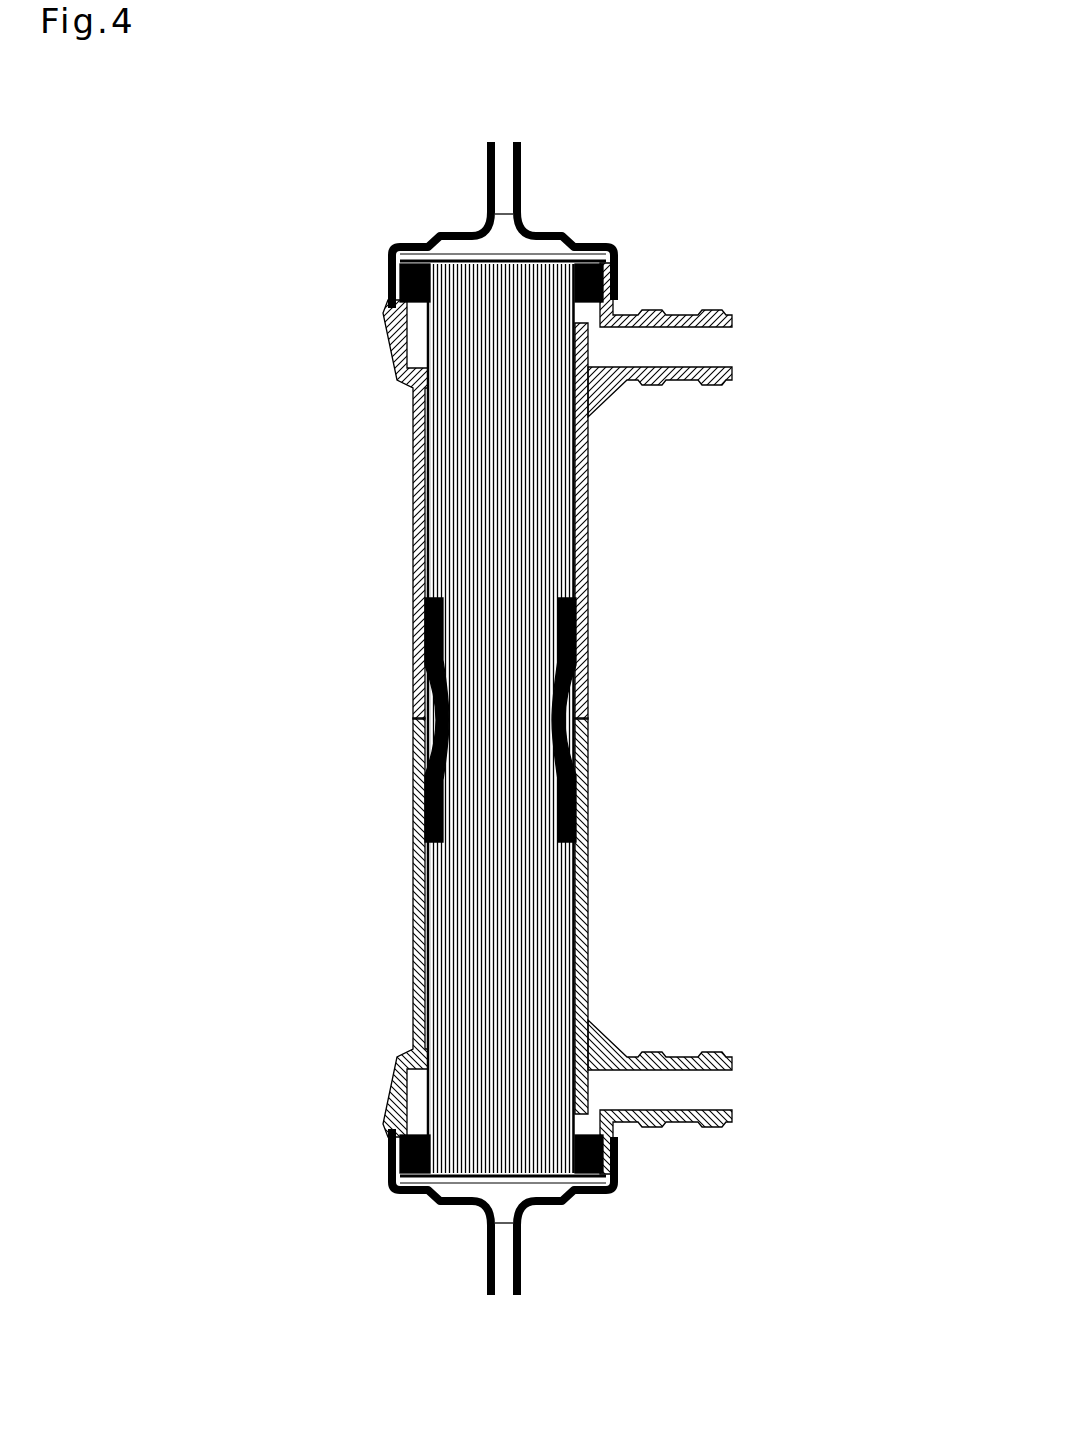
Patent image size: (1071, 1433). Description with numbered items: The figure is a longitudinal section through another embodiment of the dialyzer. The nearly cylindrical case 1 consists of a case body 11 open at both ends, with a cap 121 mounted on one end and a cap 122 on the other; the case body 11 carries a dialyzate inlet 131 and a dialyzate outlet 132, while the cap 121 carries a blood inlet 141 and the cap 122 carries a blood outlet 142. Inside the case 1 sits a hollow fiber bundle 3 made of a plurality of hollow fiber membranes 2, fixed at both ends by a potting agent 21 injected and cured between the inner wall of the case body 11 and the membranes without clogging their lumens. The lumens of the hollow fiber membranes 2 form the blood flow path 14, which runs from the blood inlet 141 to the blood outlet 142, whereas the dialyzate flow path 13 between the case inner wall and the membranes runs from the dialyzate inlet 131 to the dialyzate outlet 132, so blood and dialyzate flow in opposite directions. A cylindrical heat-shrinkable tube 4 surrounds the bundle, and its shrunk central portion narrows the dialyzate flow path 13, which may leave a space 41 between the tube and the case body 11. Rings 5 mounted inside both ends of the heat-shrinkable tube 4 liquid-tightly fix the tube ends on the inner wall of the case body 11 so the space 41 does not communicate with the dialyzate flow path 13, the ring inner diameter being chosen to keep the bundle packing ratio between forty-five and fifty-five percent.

The case 1 is at (478, 718).
The case body 11 is at (407, 948).
The cap 121 is at (395, 250).
The cap 122 is at (395, 1185).
The dialyzate flow path 13 is at (746, 654).
The dialyzate inlet 131 is at (712, 1058).
The dialyzate outlet 132 is at (715, 311).
The blood flow path 14 is at (503, 257).
The blood inlet 141 is at (487, 163).
The blood outlet 142 is at (518, 1273).
The hollow fiber membranes 2 is at (530, 555).
The potting agent 21 is at (400, 277).
The hollow fiber bundle 3 is at (588, 468).
The heat-shrinkable tube 4 is at (617, 720).
The space 41 is at (570, 748).
The rings 5 is at (557, 605).